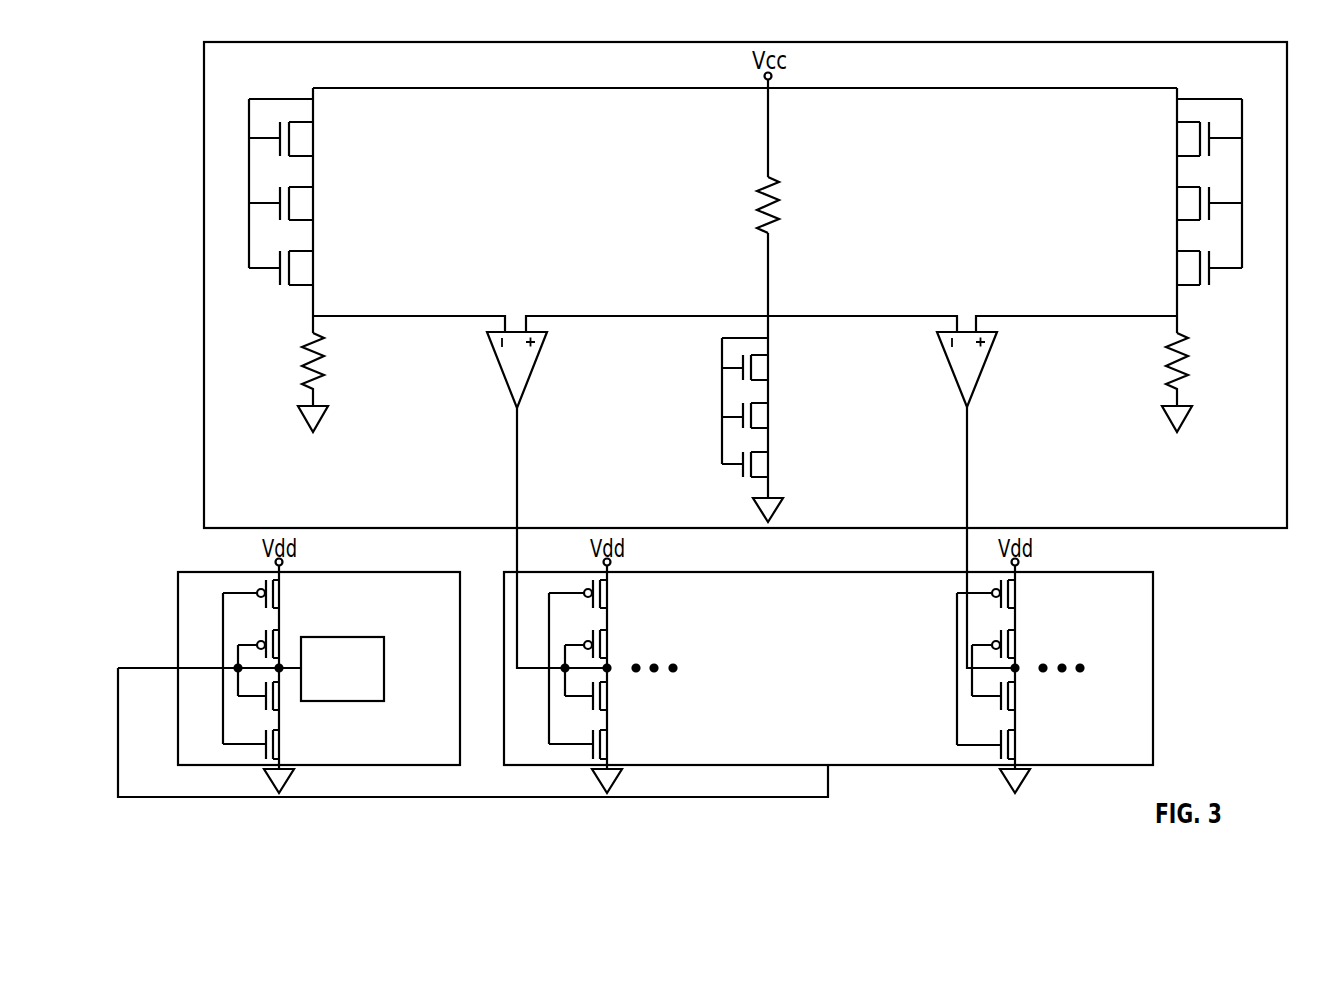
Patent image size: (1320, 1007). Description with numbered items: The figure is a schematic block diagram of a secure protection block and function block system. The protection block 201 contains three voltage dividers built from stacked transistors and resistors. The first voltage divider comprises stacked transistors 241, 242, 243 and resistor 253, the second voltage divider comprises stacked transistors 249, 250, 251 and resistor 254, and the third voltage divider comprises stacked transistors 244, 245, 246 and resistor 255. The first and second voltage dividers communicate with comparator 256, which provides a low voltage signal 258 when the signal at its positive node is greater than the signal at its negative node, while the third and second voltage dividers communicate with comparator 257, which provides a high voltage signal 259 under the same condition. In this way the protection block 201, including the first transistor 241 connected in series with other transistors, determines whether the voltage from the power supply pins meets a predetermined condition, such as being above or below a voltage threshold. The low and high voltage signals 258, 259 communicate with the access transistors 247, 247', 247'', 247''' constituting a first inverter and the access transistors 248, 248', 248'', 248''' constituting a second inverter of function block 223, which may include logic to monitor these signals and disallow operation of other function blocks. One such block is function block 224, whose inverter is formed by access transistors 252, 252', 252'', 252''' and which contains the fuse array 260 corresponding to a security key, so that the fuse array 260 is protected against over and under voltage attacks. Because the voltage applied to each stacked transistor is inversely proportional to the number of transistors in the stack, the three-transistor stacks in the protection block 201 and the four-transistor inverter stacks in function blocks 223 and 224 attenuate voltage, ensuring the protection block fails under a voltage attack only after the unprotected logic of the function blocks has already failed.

The protection block 201 is at (1250, 530).
The function block 223 is at (1117, 570).
The function block 224 is at (218, 570).
The transistor 241 is at (318, 139).
The transistor 242 is at (318, 204).
The transistor 243 is at (318, 269).
The transistor 244 is at (1166, 139).
The transistor 245 is at (1166, 204).
The transistor 246 is at (1166, 269).
The access transistor 247 is at (625, 703).
The access transistor 247' is at (626, 636).
The access transistor 247'' is at (621, 747).
The access transistor 247''' is at (623, 591).
The access transistor 248 is at (1032, 703).
The access transistor 248' is at (1034, 637).
The access transistor 248'' is at (1029, 747).
The access transistor 248''' is at (1031, 591).
The transistor 249 is at (766, 369).
The transistor 250 is at (766, 418).
The transistor 251 is at (766, 465).
The access transistor 252 is at (200, 723).
The access transistor 252' is at (200, 616).
The access transistor 252'' is at (292, 736).
The access transistor 252''' is at (294, 601).
The resistor 253 is at (296, 363).
The resistor 254 is at (748, 208).
The resistor 255 is at (1196, 363).
The comparator 256 is at (501, 370).
The comparator 257 is at (983, 370).
The low voltage signal 258 is at (519, 445).
The high voltage signal 259 is at (969, 445).
The fuse array 260 is at (360, 636).